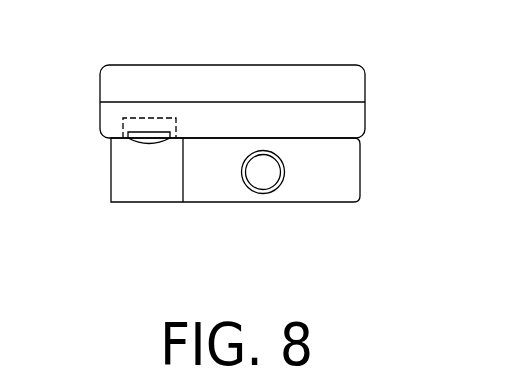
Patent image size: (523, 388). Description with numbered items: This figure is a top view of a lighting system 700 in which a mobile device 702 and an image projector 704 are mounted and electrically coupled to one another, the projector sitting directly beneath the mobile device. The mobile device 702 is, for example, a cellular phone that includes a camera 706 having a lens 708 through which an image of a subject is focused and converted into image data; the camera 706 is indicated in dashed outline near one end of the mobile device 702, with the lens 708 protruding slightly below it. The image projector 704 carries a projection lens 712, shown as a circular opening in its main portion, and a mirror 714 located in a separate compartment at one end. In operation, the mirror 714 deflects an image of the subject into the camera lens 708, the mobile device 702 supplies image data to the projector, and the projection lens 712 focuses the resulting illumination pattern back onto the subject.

The lighting system 700 is at (378, 232).
The mobile device 702 is at (257, 88).
The image projector 704 is at (361, 168).
The camera 706 is at (168, 120).
The lens 708 is at (150, 138).
The projection lens 712 is at (263, 172).
The mirror 714 is at (125, 177).